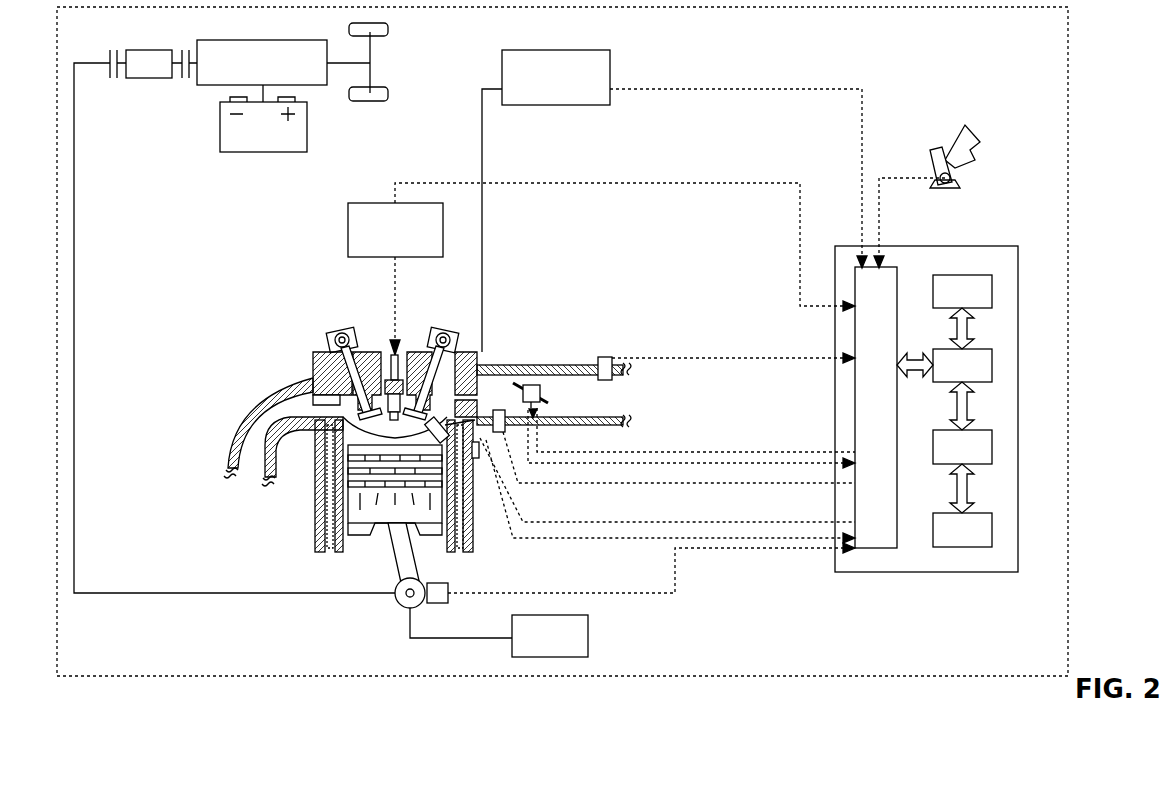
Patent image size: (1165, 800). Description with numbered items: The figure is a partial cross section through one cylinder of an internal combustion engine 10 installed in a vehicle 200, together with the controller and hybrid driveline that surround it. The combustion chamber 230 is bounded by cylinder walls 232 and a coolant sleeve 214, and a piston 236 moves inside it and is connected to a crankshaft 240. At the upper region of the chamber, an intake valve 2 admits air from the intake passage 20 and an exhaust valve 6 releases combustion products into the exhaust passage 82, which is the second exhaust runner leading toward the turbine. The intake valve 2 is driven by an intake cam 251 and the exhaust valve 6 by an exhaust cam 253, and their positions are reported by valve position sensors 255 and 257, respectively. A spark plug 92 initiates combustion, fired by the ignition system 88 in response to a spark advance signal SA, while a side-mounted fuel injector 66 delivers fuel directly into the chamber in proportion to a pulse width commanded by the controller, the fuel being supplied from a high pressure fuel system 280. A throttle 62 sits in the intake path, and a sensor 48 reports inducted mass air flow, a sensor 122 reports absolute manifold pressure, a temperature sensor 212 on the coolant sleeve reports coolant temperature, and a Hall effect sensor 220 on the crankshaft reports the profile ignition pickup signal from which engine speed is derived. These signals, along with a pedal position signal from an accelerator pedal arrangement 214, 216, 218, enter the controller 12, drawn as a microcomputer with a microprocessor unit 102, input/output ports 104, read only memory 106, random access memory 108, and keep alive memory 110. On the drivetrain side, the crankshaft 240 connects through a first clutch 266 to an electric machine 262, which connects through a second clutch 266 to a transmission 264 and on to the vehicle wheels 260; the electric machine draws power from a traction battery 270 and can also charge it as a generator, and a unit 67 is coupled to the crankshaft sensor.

The vehicle 200 is at (1068, 22).
The internal combustion engine 10 is at (266, 232).
The controller 12 is at (1018, 246).
The intake valve 2 is at (416, 365).
The exhaust valve 6 is at (355, 413).
The intake passage 20 is at (554, 407).
The mass air flow sensor 48 is at (605, 357).
The throttle 62 is at (535, 385).
The fuel injector 66 is at (442, 423).
The starter motor 67 is at (550, 636).
The exhaust passage 82 is at (268, 428).
The ignition system 88 is at (360, 203).
The spark plug 92 is at (391, 360).
The microprocessor unit 102 is at (992, 360).
The input/output ports 104 is at (897, 275).
The read only memory 106 is at (992, 286).
The random access memory 108 is at (992, 443).
The keep alive memory 110 is at (992, 526).
The manifold pressure sensor 122 is at (505, 440).
The temperature sensor 212 is at (480, 458).
The coolant sleeve 214 is at (470, 522).
The pedal arm 216 is at (930, 152).
The pedal position sensor 218 is at (960, 183).
The Hall effect sensor 220 is at (440, 605).
The combustion chamber 230 is at (332, 440).
The cylinder walls 232 is at (332, 556).
The piston 236 is at (386, 522).
The crankshaft 240 is at (398, 607).
The intake cam 251 is at (441, 332).
The exhaust cam 253 is at (350, 332).
The valve position sensor 255 is at (456, 337).
The valve position sensor 257 is at (330, 343).
The vehicle wheels 260 is at (374, 101).
The electric machine 262 is at (150, 78).
The transmission 264 is at (318, 85).
The clutch 266 is at (110, 52).
The traction battery 270 is at (262, 152).
The fuel system 280 is at (611, 58).